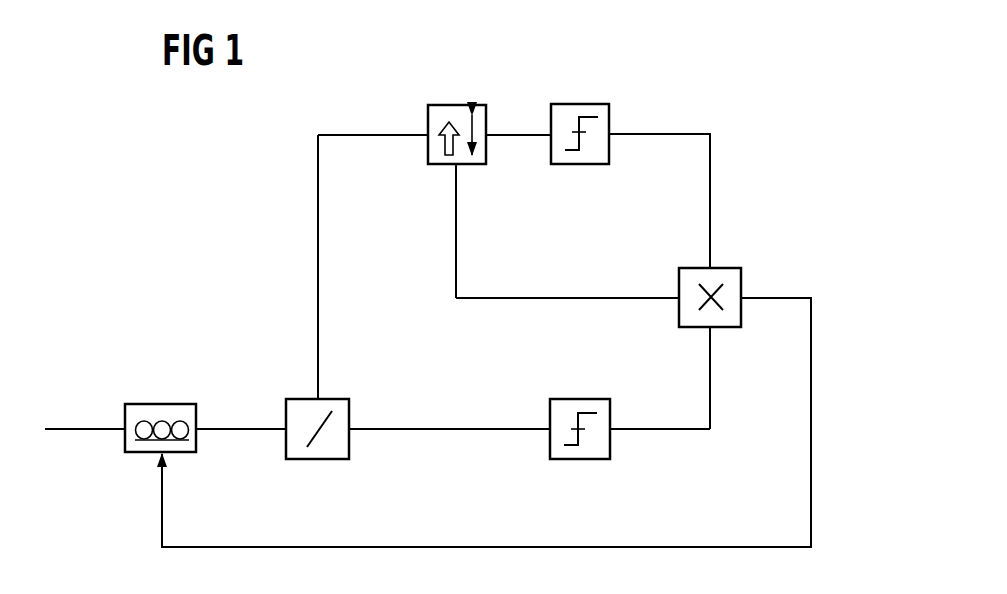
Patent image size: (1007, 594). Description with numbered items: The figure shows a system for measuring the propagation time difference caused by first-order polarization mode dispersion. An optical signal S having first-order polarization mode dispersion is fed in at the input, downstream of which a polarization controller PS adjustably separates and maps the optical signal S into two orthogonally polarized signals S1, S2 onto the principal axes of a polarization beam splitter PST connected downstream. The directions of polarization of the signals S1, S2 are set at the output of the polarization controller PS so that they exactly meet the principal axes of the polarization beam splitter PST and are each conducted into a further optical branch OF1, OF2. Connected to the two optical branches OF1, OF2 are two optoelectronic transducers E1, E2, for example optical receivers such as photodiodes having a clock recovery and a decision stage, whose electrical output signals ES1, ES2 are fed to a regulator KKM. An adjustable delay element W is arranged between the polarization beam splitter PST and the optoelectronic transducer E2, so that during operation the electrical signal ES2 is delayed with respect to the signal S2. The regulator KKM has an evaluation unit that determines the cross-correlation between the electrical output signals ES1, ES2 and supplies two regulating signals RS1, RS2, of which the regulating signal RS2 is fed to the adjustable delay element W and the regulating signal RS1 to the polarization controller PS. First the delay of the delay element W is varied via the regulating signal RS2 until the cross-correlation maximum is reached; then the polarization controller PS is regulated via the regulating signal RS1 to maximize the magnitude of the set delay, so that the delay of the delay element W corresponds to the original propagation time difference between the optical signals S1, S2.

The optical signal S is at (88, 416).
The polarization controller PS is at (160, 401).
The first orthogonally polarized signal S1 is at (268, 415).
The second orthogonally polarized signal S2 is at (302, 258).
The polarization beam splitter PST is at (327, 458).
The first optical branch OF1 is at (440, 428).
The second optical branch OF2 is at (363, 128).
The adjustable delay element W is at (454, 100).
The first optoelectronic transducer E1 is at (577, 396).
The second optoelectronic transducer E2 is at (580, 102).
The first electrical output signal ES1 is at (668, 415).
The second electrical output signal ES2 is at (670, 119).
The regulator KKM is at (727, 326).
The first regulating signal RS1 is at (822, 422).
The second regulating signal RS2 is at (532, 285).